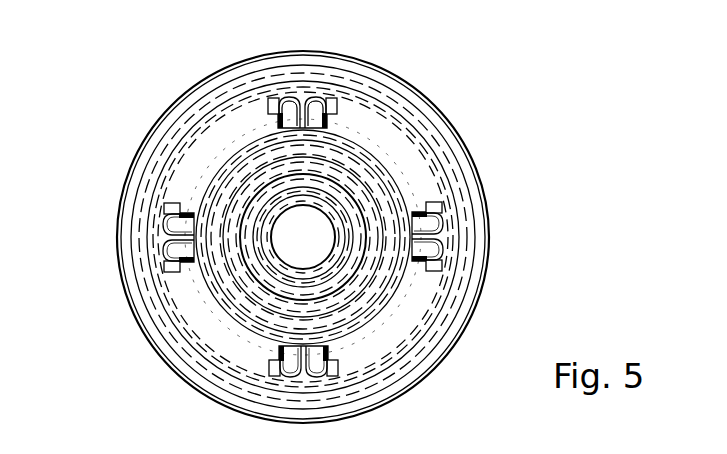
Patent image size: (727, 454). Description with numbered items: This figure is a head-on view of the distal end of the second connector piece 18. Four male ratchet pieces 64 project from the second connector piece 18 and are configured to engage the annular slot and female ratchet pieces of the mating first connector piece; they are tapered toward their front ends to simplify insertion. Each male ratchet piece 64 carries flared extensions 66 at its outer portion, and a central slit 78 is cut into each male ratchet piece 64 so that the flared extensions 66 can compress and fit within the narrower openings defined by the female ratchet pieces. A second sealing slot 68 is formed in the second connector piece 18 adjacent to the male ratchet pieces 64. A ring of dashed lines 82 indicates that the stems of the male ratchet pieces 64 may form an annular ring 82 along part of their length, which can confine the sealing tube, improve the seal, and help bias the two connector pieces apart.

The second connector piece 18 is at (460, 112).
The male ratchet pieces 64 is at (330, 90).
The flared extensions 66 is at (443, 207).
The second sealing slot 68 is at (248, 156).
The central slit 78 is at (302, 97).
The annular ring 82 is at (408, 190).